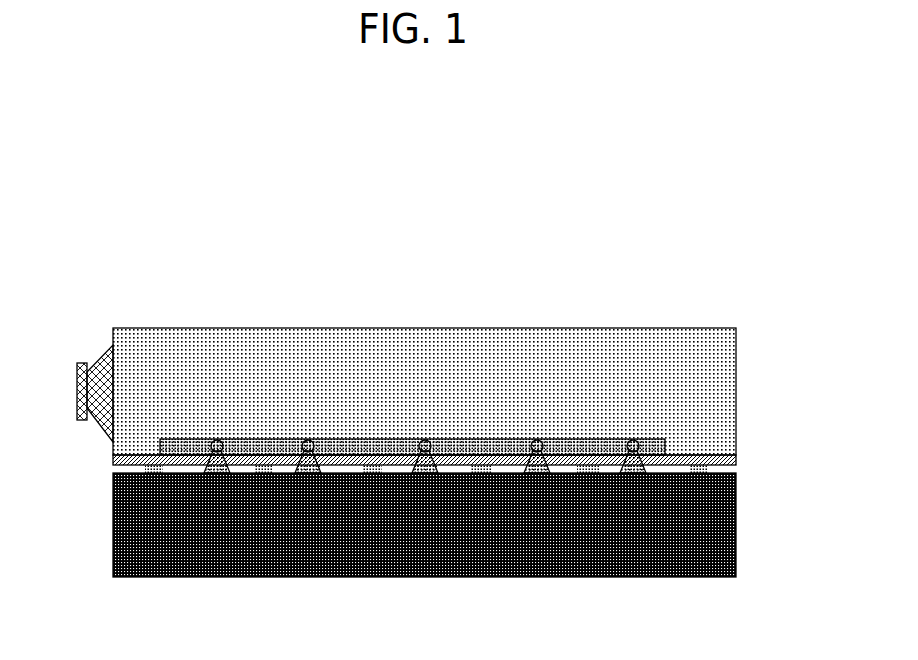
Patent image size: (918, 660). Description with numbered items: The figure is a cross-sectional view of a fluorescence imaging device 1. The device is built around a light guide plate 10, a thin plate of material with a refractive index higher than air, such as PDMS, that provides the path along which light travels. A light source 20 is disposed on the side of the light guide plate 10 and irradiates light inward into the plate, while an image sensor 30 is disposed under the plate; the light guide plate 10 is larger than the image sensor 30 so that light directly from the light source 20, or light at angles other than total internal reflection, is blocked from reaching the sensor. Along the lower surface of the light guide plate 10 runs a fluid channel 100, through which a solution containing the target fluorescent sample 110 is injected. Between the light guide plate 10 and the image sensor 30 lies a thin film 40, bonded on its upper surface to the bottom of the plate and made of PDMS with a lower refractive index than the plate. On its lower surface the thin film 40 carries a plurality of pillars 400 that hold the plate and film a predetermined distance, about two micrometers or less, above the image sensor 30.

The fluorescence imaging device 1 is at (566, 260).
The light guide plate 10 is at (726, 365).
The light source 20 is at (82, 363).
The image sensor 30 is at (737, 523).
The thin film 40 is at (736, 457).
The fluid channel 100 is at (392, 438).
The target fluorescent sample 110 is at (219, 424).
The pillars 400 is at (578, 468).